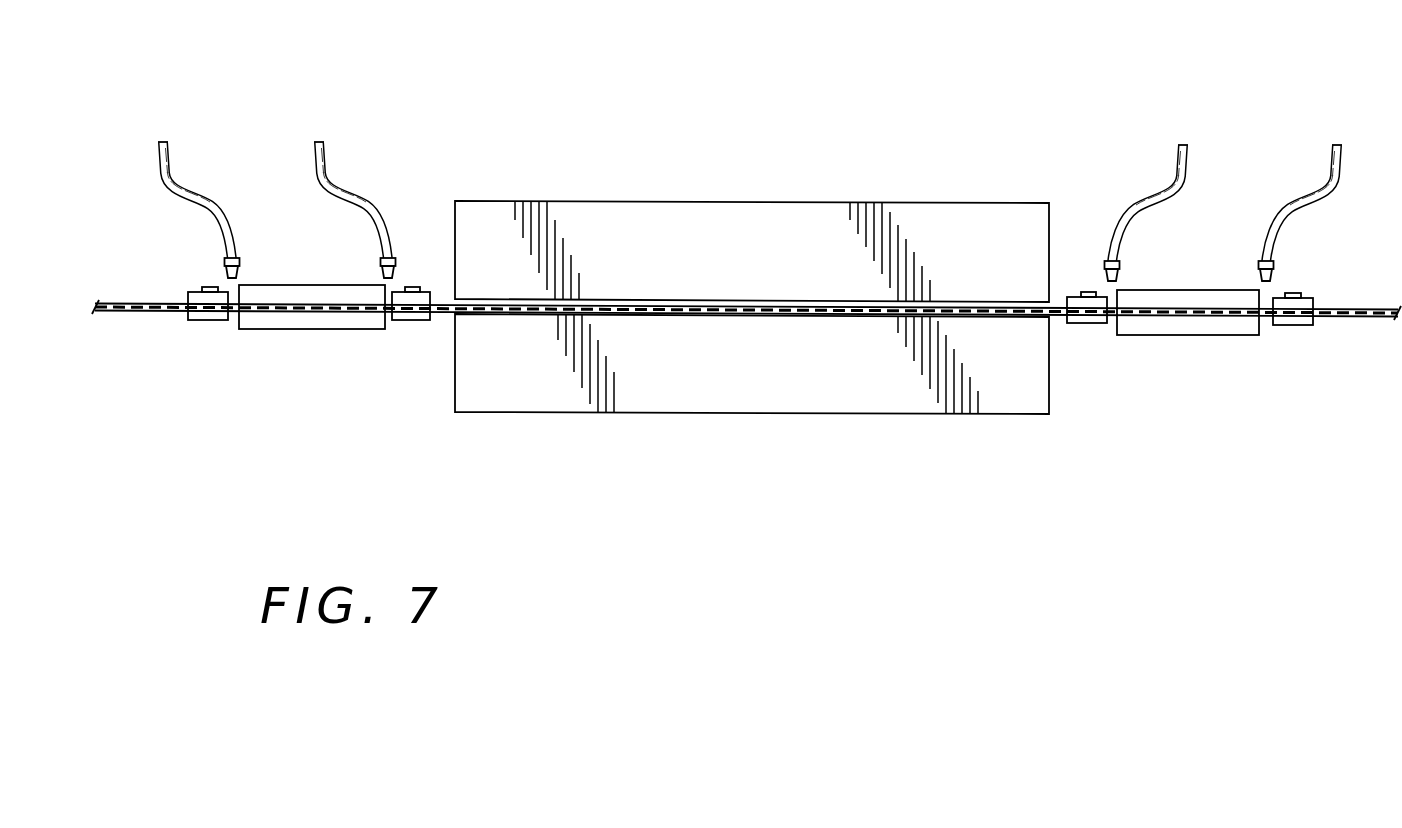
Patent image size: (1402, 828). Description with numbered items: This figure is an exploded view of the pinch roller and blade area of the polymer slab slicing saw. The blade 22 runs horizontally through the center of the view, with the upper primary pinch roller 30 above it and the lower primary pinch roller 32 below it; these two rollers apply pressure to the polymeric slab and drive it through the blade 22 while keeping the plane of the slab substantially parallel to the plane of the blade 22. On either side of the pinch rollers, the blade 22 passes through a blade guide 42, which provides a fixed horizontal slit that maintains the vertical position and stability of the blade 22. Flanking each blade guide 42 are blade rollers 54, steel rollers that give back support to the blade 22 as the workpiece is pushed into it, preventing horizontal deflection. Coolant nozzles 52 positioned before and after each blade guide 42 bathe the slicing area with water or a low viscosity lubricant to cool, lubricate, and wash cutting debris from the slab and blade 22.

The blade 22 is at (1352, 315).
The upper primary pinch roller 30 is at (803, 253).
The lower primary pinch roller 32 is at (680, 377).
The blade guide 42 is at (312, 317).
The coolant nozzle 52 is at (165, 138).
The blade roller 54 is at (223, 317).